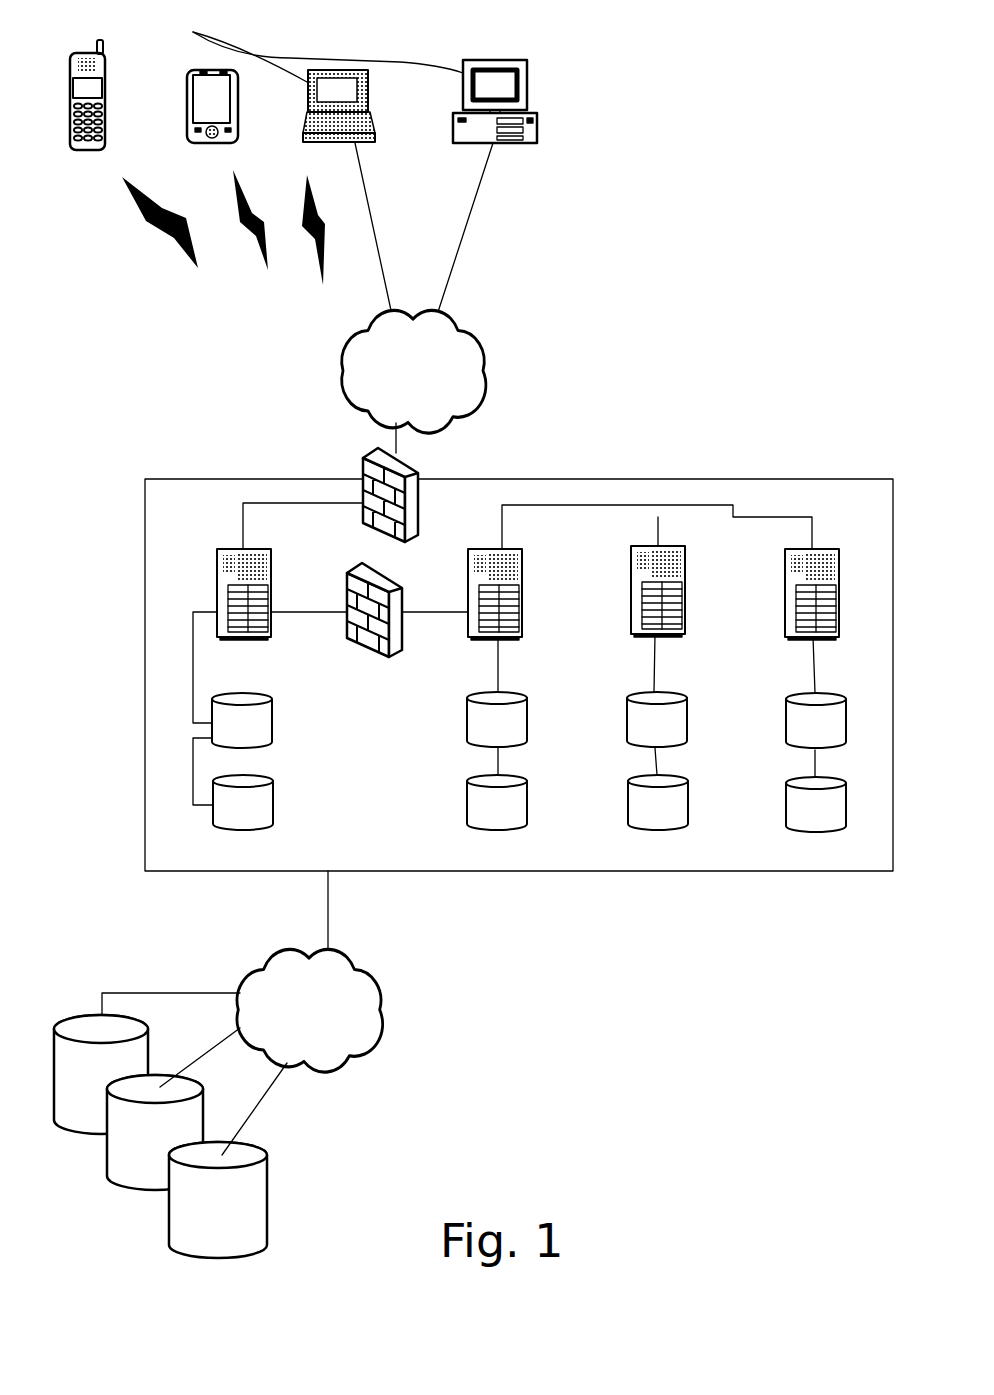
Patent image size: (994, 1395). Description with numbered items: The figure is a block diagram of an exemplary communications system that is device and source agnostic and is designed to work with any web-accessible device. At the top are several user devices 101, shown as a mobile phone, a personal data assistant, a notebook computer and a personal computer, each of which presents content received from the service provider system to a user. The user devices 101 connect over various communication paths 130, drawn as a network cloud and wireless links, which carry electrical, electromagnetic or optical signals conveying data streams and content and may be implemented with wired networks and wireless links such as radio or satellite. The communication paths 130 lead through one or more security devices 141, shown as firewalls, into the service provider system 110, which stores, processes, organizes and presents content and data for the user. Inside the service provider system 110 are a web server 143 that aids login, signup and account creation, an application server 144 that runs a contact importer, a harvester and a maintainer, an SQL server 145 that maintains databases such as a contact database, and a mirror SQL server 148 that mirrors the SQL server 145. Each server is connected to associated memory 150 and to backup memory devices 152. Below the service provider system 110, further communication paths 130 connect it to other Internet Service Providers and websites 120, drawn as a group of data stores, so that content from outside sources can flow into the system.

The user device 101 is at (187, 93).
The service provider system 110 is at (393, 844).
The other Internet Service Providers and websites 120 is at (119, 1079).
The communication paths 130 is at (433, 380).
The security device 141 is at (363, 525).
The web server 143 is at (270, 638).
The application server 144 is at (522, 637).
The SQL server 145 is at (683, 635).
The mirror SQL server 148 is at (785, 565).
The memory 150 is at (467, 720).
The backup memory device 152 is at (467, 803).